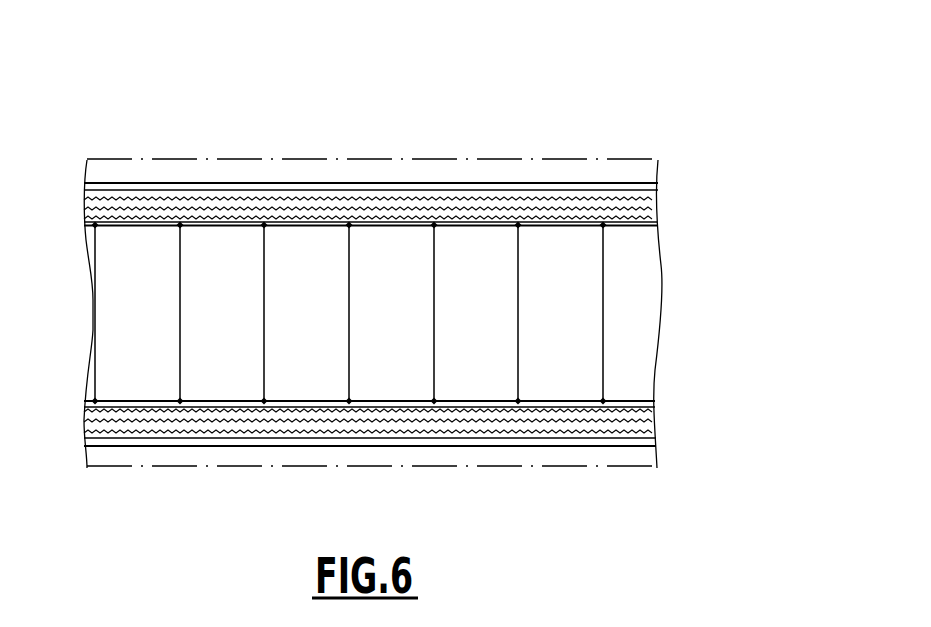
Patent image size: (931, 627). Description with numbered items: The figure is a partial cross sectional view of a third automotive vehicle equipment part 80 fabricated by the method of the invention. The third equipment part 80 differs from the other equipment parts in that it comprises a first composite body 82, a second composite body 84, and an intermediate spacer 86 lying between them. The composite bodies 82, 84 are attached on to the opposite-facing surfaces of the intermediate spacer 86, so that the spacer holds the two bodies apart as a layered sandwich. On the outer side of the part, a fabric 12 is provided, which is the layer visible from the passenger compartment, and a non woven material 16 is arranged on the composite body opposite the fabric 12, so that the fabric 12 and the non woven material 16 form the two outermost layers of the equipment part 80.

The third automotive vehicle equipment part 80 is at (97, 137).
The fabric 12 is at (506, 182).
The non woven material 16 is at (282, 445).
The first composite body 82 is at (660, 202).
The second composite body 84 is at (660, 427).
The intermediate spacer 86 is at (617, 338).